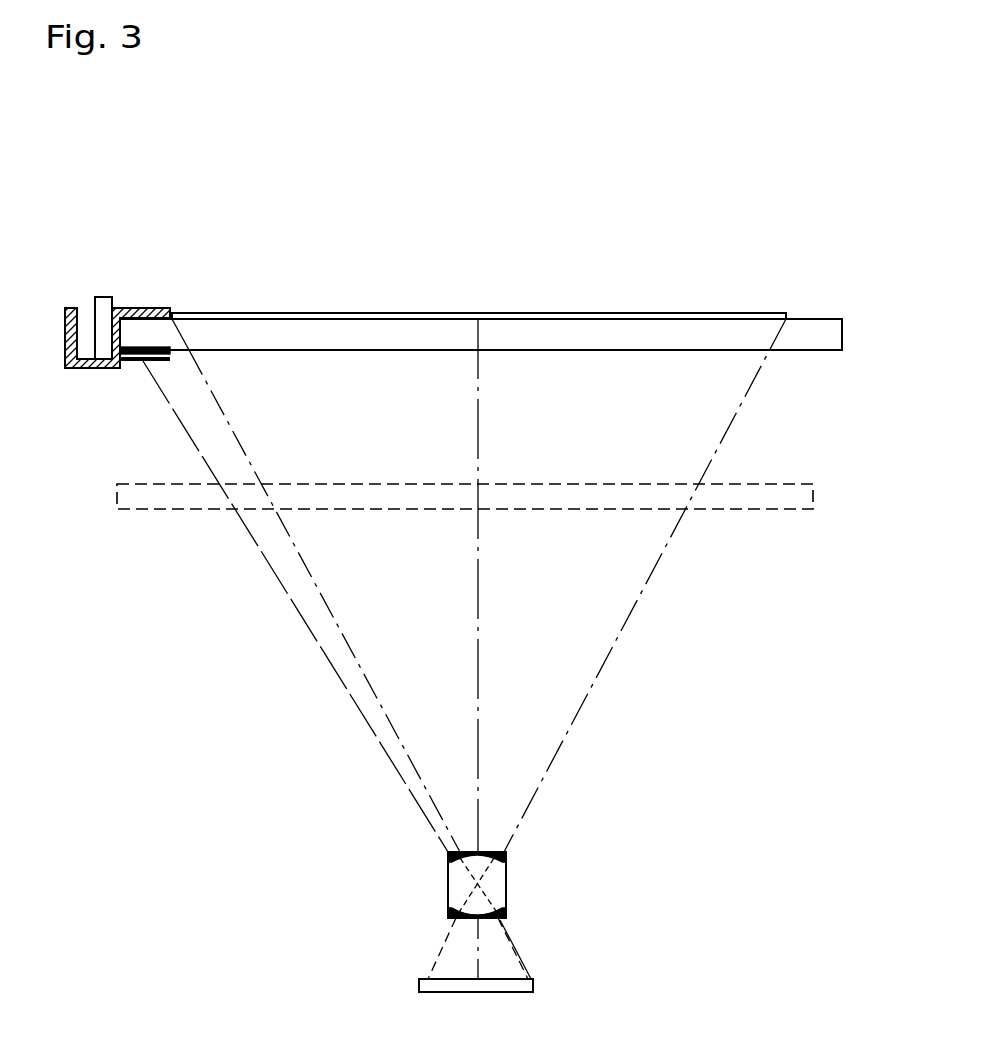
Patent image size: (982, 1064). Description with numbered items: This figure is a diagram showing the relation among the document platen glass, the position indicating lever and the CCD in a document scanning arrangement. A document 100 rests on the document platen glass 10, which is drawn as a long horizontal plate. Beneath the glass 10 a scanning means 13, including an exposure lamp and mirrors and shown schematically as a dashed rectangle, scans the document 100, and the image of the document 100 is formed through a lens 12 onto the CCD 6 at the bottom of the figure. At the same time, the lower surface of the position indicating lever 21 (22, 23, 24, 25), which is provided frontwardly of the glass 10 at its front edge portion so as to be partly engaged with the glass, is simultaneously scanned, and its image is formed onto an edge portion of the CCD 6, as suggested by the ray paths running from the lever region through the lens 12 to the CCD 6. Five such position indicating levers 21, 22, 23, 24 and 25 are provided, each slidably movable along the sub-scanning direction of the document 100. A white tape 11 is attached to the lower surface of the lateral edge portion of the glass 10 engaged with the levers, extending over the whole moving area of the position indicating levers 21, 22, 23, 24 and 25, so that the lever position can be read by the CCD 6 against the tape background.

The position indicating lever 21 is at (217, 244).
The position indicating lever 22 is at (103, 328).
The position indicating lever 23 is at (103, 328).
The position indicating lever 24 is at (103, 328).
The position indicating lever 25 is at (103, 328).
The document platen glass 10 is at (817, 351).
The document 100 is at (720, 314).
The white tape 11 is at (172, 350).
The scanning means 13 is at (742, 510).
The lens 12 is at (502, 872).
The CCD 6 is at (533, 983).